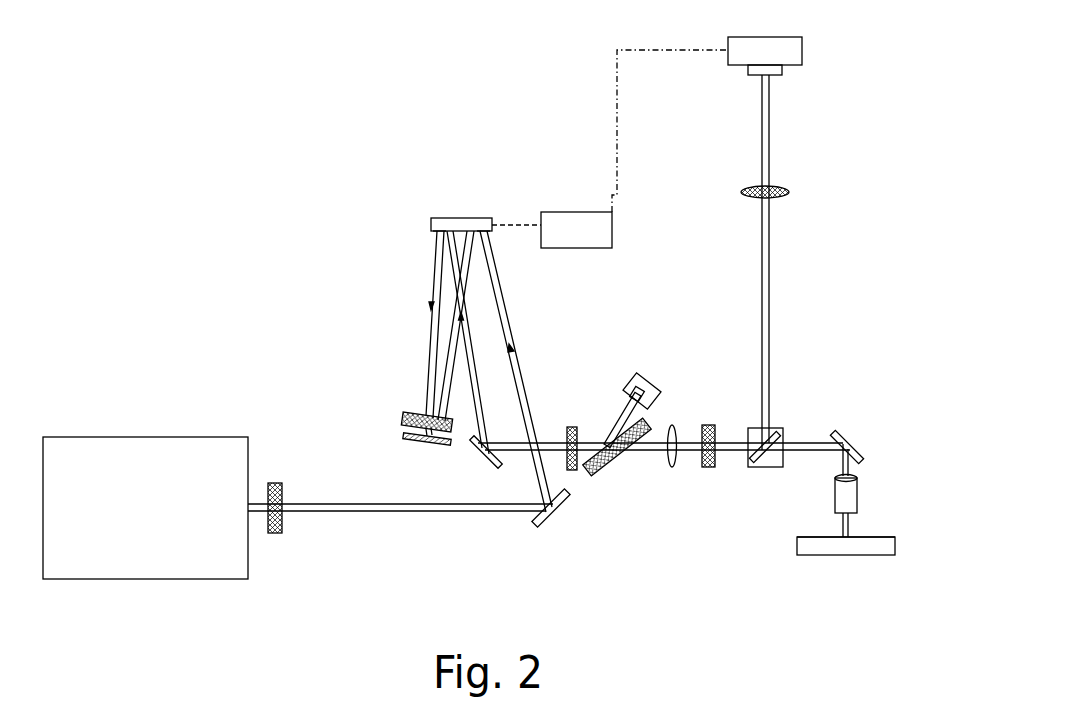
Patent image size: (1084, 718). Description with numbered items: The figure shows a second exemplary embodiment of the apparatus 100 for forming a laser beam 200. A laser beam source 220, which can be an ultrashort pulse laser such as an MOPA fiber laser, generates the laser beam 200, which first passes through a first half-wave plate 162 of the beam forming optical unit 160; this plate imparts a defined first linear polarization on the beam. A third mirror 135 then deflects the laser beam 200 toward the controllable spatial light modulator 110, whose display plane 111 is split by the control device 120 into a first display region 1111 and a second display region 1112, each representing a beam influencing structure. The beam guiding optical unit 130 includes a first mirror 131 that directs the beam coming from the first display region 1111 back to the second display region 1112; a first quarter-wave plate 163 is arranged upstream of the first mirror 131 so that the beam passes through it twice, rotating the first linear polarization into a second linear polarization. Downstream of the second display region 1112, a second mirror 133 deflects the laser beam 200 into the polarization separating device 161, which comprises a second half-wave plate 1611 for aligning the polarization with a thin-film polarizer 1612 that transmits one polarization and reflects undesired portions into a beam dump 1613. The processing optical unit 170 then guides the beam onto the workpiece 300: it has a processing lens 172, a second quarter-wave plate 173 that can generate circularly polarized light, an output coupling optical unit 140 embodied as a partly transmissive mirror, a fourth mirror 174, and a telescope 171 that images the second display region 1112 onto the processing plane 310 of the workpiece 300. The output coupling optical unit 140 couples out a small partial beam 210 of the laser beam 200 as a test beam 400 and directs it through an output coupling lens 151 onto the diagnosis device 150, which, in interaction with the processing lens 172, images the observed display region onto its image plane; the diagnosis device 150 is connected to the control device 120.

The apparatus for forming a laser beam 100 is at (270, 92).
The controllable spatial light modulator 110 is at (452, 314).
The display plane 111 is at (432, 228).
The first display region 1111 is at (487, 233).
The second display region 1112 is at (437, 233).
The control device 120 is at (613, 237).
The beam guiding optical unit 130 is at (516, 525).
The first mirror 131 is at (402, 438).
The second mirror 133 is at (481, 460).
The third mirror 135 is at (560, 520).
The output coupling optical unit 140 is at (772, 428).
The diagnosis device 150 is at (803, 50).
The output coupling lens 151 is at (790, 192).
The beam forming optical unit 160 is at (633, 442).
The polarization separating device 161 is at (660, 381).
The second half-wave plate 1611 is at (571, 427).
The thin-film polarizer 1612 is at (657, 418).
The beam dump 1613 is at (641, 380).
The first half-wave plate 162 is at (275, 534).
The first quarter-wave plate 163 is at (402, 418).
The processing optical unit 170 is at (892, 458).
The telescope 171 is at (858, 486).
The processing lens 172 is at (672, 468).
The second quarter-wave plate 173 is at (709, 468).
The fourth mirror 174 is at (857, 437).
The laser beam 200 is at (390, 513).
The partial beam 210 is at (772, 252).
The laser beam source 220 is at (146, 437).
The workpiece 300 is at (800, 546).
The processing plane 310 is at (873, 538).
The test beam 400 is at (840, 262).